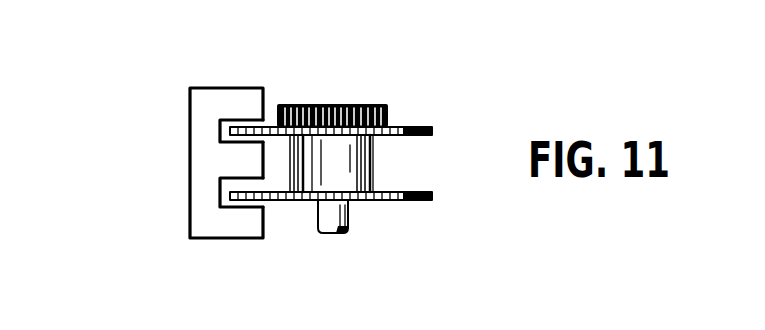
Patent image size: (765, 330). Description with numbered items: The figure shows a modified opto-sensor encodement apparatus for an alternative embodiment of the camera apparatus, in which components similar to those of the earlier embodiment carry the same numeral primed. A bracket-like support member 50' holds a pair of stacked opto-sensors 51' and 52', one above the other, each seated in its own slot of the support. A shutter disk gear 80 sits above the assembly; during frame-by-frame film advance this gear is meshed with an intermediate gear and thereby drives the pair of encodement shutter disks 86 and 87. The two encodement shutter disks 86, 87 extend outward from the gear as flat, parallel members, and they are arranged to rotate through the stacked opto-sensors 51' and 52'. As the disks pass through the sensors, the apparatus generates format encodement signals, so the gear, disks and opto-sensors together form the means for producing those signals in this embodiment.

The mounting bracket 50' is at (162, 163).
The opto-sensor 51' is at (235, 90).
The opto-sensor 52' is at (236, 234).
The shutter disk gear 80 is at (330, 104).
The encodement shutter disk 86 is at (425, 123).
The encodement shutter disk 87 is at (425, 190).